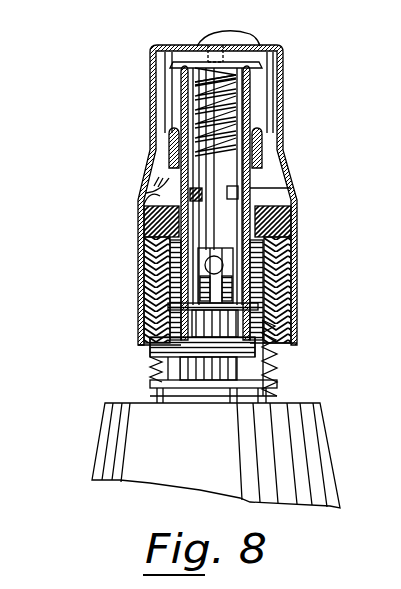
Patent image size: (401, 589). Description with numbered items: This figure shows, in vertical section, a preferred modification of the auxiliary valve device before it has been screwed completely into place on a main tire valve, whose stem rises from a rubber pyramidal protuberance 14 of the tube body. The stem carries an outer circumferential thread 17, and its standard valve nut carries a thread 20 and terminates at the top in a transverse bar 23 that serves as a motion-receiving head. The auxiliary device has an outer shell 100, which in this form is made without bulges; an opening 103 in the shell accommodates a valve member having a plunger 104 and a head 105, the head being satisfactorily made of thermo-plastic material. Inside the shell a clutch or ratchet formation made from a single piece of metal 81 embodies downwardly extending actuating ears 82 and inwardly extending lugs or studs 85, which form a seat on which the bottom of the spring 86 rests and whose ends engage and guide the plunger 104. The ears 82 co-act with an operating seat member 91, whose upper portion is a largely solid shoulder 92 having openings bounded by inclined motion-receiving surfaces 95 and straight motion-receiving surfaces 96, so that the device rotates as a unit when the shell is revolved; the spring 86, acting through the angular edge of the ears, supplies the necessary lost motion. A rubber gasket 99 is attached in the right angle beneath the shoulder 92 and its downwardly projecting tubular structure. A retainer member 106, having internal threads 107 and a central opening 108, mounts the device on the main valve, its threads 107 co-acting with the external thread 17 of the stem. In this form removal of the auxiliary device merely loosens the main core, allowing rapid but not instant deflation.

The rubber pyramidal protuberance 14 is at (216, 455).
The outer circumferential thread 17 is at (152, 370).
The thread 20 is at (278, 350).
The transverse bar 23 is at (140, 308).
The single piece of metal 81 is at (156, 172).
The actuating ears 82 is at (265, 140).
The lugs or studs 85 is at (238, 193).
The spring 86 is at (252, 92).
The operating seat member 91 is at (153, 178).
The shoulder 92 is at (146, 194).
The inclined motion-receiving surfaces 95 is at (274, 196).
The straight motion-receiving surfaces 96 is at (150, 185).
The rubber gasket 99 is at (144, 221).
The outer shell 100 is at (285, 121).
The opening 103 is at (197, 45).
The plunger 104 is at (192, 118).
The head 105 is at (223, 45).
The retainer member 106 is at (144, 262).
The internal threads 107 is at (140, 325).
The central opening 108 is at (150, 350).